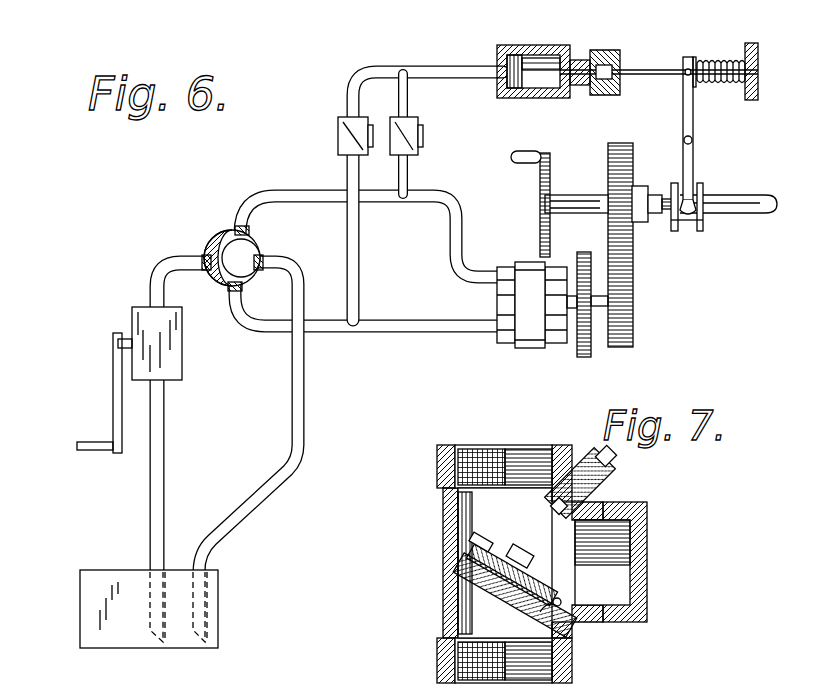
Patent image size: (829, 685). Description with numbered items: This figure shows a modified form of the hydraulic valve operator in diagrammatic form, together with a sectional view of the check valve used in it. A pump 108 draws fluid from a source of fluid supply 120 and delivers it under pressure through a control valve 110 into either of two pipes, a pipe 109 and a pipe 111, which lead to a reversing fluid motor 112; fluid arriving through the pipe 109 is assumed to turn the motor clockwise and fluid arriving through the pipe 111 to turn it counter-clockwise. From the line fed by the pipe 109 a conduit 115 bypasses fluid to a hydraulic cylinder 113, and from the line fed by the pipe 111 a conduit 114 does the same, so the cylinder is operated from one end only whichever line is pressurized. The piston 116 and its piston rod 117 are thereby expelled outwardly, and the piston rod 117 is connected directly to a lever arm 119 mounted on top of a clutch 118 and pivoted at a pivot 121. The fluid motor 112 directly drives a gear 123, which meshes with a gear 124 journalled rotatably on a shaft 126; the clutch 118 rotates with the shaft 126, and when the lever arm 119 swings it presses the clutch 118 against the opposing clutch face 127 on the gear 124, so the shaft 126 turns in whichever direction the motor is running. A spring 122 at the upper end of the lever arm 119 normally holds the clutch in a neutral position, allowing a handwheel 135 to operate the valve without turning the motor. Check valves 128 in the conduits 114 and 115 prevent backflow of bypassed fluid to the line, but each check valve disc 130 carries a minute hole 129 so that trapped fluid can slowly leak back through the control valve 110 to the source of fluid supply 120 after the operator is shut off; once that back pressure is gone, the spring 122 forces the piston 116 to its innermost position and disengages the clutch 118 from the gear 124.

In FIG. 6, the pump 108 is at (132, 322).
In FIG. 6, the pipe 109 is at (275, 192).
In FIG. 6, the control valve 110 is at (212, 240).
In FIG. 6, the pipe 111 is at (278, 336).
In FIG. 6, the reversing fluid motor 112 is at (500, 350).
In FIG. 6, the hydraulic cylinder 113 is at (547, 44).
In FIG. 6, the conduit 114 is at (349, 98).
In FIG. 6, the conduit 115 is at (408, 96).
In FIG. 6, the piston 116 is at (508, 100).
In FIG. 6, the piston rod 117 is at (647, 68).
In FIG. 6, the clutch 118 is at (670, 230).
In FIG. 6, the lever arm 119 is at (695, 120).
In FIG. 6, the source of fluid supply 120 is at (98, 578).
In FIG. 6, the pivot 121 is at (694, 142).
In FIG. 6, the spring 122 is at (712, 60).
In FIG. 6, the gear 123 is at (608, 334).
In FIG. 6, the gear 124 is at (608, 148).
In FIG. 6, the shaft 126 is at (745, 198).
In FIG. 6, the clutch face 127 is at (645, 188).
In FIG. 6, the check valve 128 is at (338, 142).
In FIG. 7, the check valve 128 is at (443, 576).
In FIG. 7, the minute hole 129 is at (490, 540).
In FIG. 7, the check valve disc 130 is at (553, 598).
In FIG. 6, the handwheel 135 is at (540, 199).